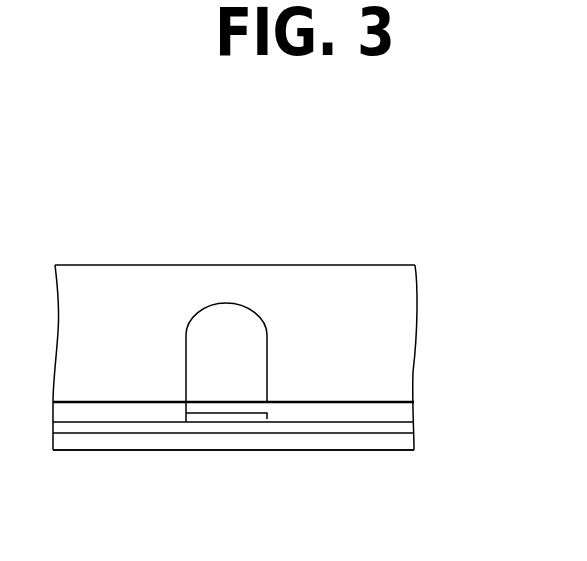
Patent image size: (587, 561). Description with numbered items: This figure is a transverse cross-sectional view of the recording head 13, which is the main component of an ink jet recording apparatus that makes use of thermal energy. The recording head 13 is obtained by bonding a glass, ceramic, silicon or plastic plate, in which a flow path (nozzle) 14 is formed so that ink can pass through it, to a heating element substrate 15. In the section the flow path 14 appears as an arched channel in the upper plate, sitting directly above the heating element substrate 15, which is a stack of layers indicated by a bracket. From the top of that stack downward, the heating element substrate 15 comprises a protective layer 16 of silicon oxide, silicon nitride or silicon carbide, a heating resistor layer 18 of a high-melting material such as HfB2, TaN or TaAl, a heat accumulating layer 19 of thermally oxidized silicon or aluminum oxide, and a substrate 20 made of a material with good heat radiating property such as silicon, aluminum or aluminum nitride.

The recording head 13 is at (69, 265).
The flow path (nozzle) 14 is at (223, 303).
The heating element substrate 15 is at (432, 395).
The protective layer 16 is at (332, 402).
The heating resistor layer 18 is at (262, 416).
The heat accumulating layer 19 is at (382, 425).
The substrate 20 is at (345, 442).